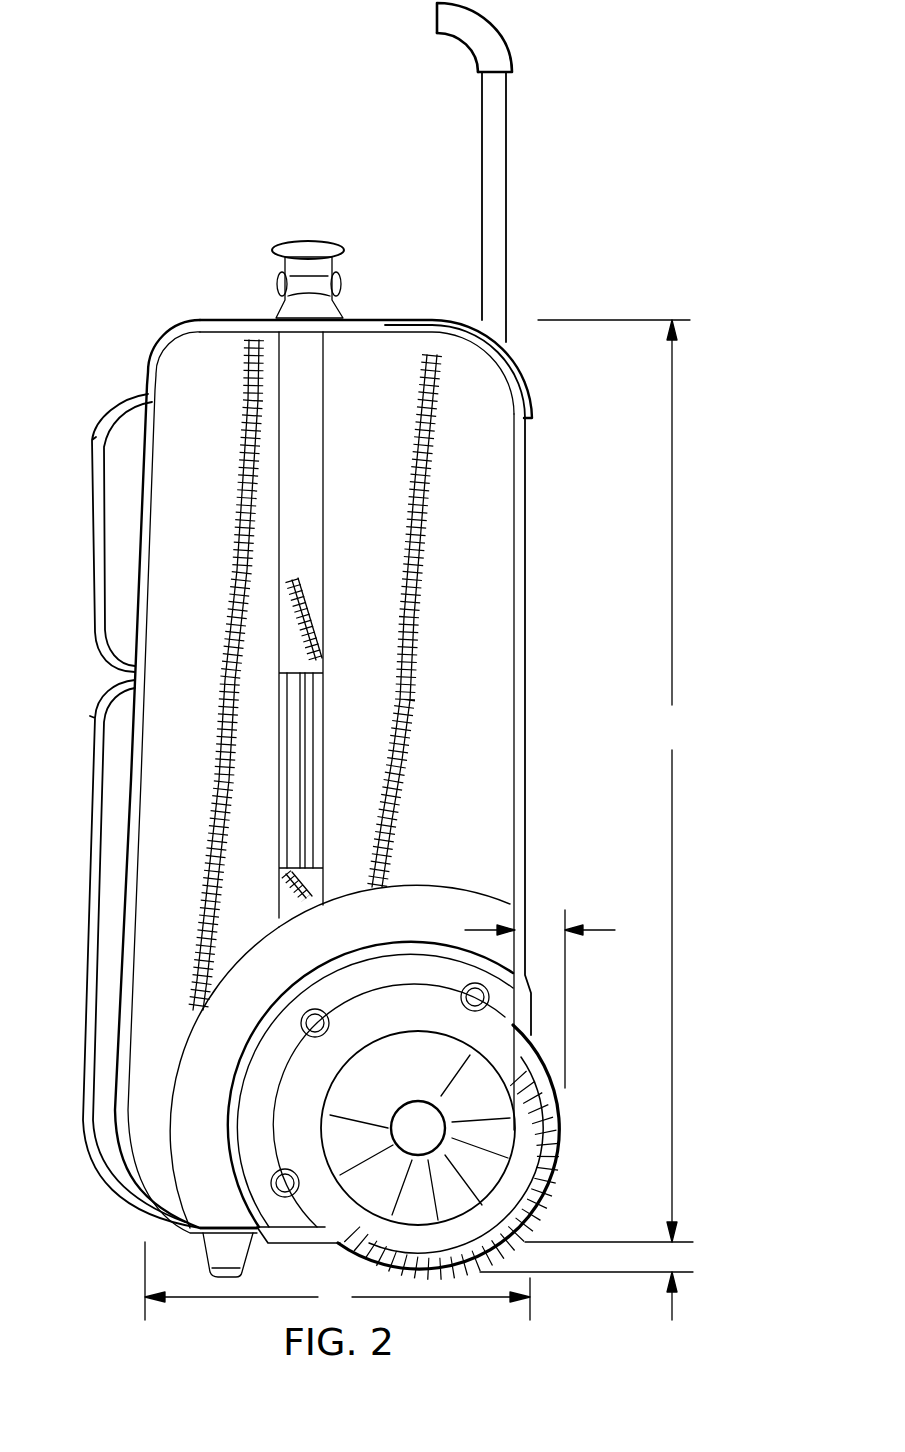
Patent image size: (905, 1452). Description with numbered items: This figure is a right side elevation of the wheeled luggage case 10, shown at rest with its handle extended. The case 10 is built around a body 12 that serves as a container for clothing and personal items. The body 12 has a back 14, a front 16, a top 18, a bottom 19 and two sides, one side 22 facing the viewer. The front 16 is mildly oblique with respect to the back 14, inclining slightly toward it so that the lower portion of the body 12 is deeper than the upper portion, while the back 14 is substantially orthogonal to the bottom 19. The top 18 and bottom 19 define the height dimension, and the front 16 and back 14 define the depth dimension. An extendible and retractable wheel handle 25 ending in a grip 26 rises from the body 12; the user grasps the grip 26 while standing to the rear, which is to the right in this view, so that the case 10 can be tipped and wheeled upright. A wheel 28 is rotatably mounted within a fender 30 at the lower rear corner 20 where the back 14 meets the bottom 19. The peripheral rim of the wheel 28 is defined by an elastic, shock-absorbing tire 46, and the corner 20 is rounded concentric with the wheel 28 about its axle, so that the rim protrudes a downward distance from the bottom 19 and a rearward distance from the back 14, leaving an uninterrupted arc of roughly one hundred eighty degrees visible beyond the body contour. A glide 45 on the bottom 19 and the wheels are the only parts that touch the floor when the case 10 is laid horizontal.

The case 10 is at (146, 250).
The body 12 is at (190, 372).
The back 14 is at (525, 539).
The front 16 is at (100, 676).
The top 18 is at (388, 318).
The bottom 19 is at (188, 1234).
The lower rear corner 20 is at (530, 1193).
The side 22 is at (485, 665).
The wheel handle 25 is at (506, 222).
The grip 26 is at (487, 35).
The wheel 28 is at (535, 1133).
The fender 30 is at (200, 1057).
The glide 45 is at (233, 1258).
The tire 46 is at (548, 1170).